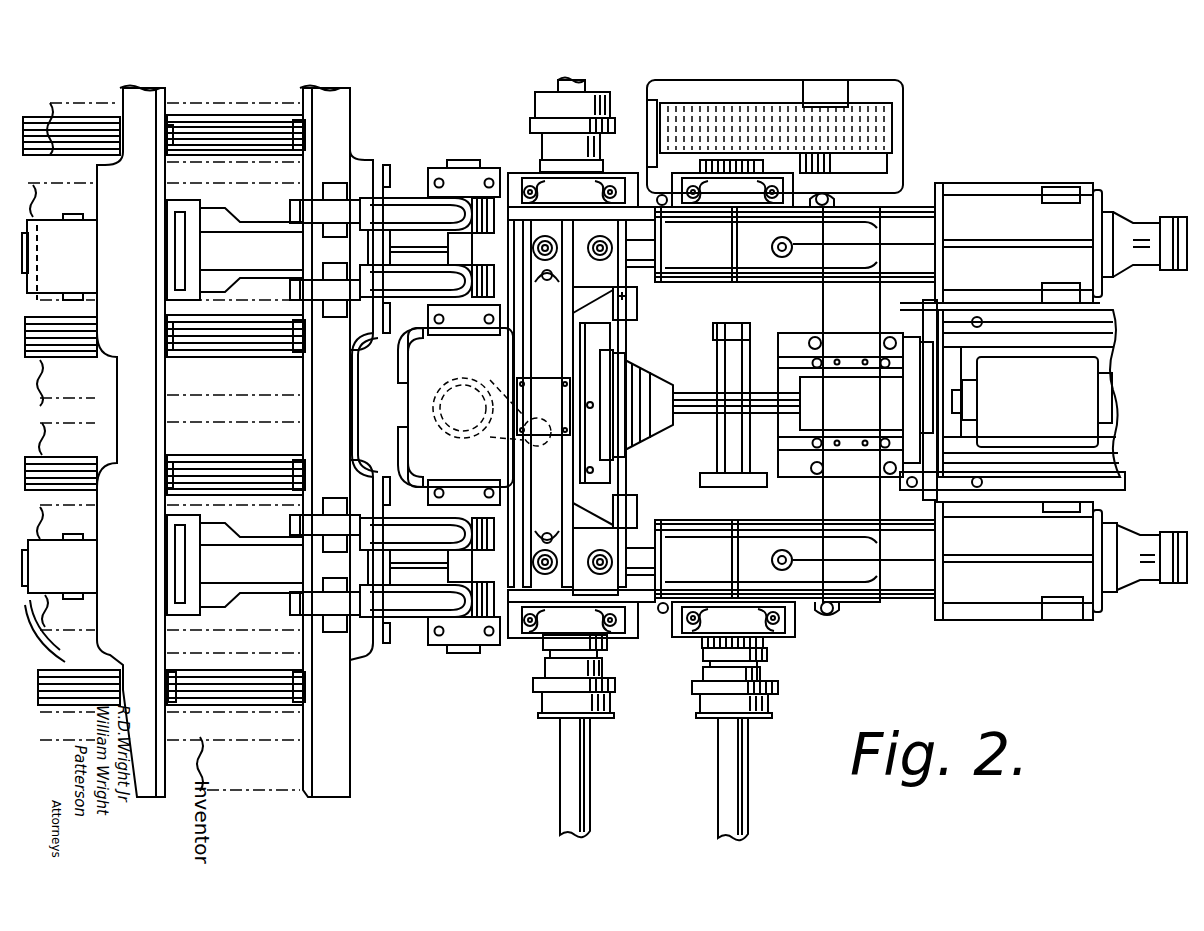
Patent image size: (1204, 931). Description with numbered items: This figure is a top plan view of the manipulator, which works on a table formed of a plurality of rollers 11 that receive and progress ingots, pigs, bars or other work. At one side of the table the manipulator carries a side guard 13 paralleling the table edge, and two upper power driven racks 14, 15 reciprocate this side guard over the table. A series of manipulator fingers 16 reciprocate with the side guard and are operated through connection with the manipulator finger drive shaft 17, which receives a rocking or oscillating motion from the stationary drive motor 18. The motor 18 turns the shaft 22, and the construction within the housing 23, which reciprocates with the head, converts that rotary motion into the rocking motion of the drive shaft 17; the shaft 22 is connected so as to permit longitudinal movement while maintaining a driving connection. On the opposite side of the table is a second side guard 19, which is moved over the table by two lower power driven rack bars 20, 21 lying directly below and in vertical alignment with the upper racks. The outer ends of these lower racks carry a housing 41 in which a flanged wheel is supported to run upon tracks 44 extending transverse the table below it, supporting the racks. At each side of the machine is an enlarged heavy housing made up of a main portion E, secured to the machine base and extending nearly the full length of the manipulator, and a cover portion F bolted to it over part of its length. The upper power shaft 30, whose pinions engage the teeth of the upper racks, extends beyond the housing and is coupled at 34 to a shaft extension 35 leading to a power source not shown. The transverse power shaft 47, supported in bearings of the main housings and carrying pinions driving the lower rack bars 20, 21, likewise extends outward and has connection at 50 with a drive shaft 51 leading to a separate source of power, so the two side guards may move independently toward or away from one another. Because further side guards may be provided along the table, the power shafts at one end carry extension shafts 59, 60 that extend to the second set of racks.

The rollers 11 is at (60, 155).
The side guard 13 is at (347, 378).
The power driven rack 14 is at (417, 563).
The power driven rack 15 is at (420, 235).
The manipulator fingers 16 is at (290, 298).
The manipulator finger drive shaft 17 is at (472, 168).
The drive motor 18 is at (1012, 396).
The second side guard 19 is at (243, 442).
The lower rack bar 20 is at (252, 598).
The lower rack bar 21 is at (228, 248).
The shaft 22 is at (712, 408).
The housing 23 is at (523, 403).
The power shaft 30 is at (780, 655).
The coupling 34 is at (780, 682).
The shaft extension 35 is at (730, 752).
The housing 41 is at (59, 406).
The tracks 44 is at (52, 640).
The transverse power shaft 47 is at (608, 658).
The connection 50 is at (615, 688).
The drive shaft 51 is at (590, 745).
The extension shaft 59 is at (540, 88).
The extension shaft 60 is at (775, 136).
The main housing portion E is at (520, 655).
The cover portion F is at (921, 401).